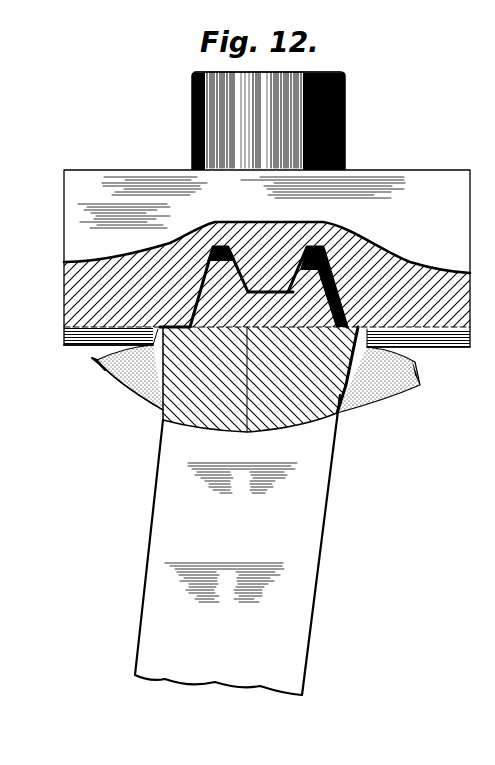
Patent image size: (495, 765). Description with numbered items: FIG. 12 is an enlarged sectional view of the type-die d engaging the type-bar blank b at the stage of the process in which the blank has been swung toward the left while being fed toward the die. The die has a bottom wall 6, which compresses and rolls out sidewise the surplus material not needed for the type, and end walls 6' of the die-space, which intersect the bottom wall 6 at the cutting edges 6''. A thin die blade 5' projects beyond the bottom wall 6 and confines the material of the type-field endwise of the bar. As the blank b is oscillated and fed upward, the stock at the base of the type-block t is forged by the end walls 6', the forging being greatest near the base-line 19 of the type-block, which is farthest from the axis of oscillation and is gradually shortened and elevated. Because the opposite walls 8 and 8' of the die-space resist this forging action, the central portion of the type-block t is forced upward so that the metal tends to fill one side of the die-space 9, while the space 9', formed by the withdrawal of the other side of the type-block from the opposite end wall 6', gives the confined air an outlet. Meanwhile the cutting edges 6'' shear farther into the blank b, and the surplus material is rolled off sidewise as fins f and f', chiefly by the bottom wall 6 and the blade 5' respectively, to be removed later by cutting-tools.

The type-die d is at (267, 258).
The wall of the die-space 8 is at (268, 181).
The wall of the die-space 8' is at (270, 246).
The die-space 9 is at (267, 274).
The space formed by withdrawal of the type-blank 9' is at (314, 287).
The bottom wall of the die 6 is at (267, 353).
The end wall of the die-space 6' is at (259, 274).
The cutting edge 6'' is at (221, 287).
The die blade 5' is at (95, 358).
The type-block t is at (219, 287).
The base-line of the type-block 19 is at (246, 433).
The fin f is at (256, 374).
The fin f' is at (116, 385).
The type-bar blank b is at (237, 545).